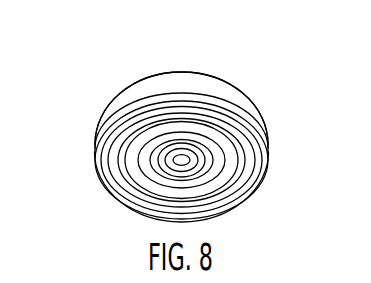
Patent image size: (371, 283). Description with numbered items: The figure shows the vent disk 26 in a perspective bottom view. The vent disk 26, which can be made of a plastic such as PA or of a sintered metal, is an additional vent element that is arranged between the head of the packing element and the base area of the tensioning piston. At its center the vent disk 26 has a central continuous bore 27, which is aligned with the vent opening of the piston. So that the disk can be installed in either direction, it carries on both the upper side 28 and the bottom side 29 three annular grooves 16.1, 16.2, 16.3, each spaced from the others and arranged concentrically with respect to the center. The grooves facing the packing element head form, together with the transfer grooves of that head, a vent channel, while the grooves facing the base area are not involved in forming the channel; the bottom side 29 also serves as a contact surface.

The vent disk 26 is at (238, 92).
The upper side 28 is at (134, 83).
The bottom side 29 is at (165, 163).
The annular groove 16.1 is at (217, 151).
The annular groove 16.2 is at (227, 161).
The annular groove 16.3 is at (126, 141).
The central continuous bore 27 is at (230, 192).